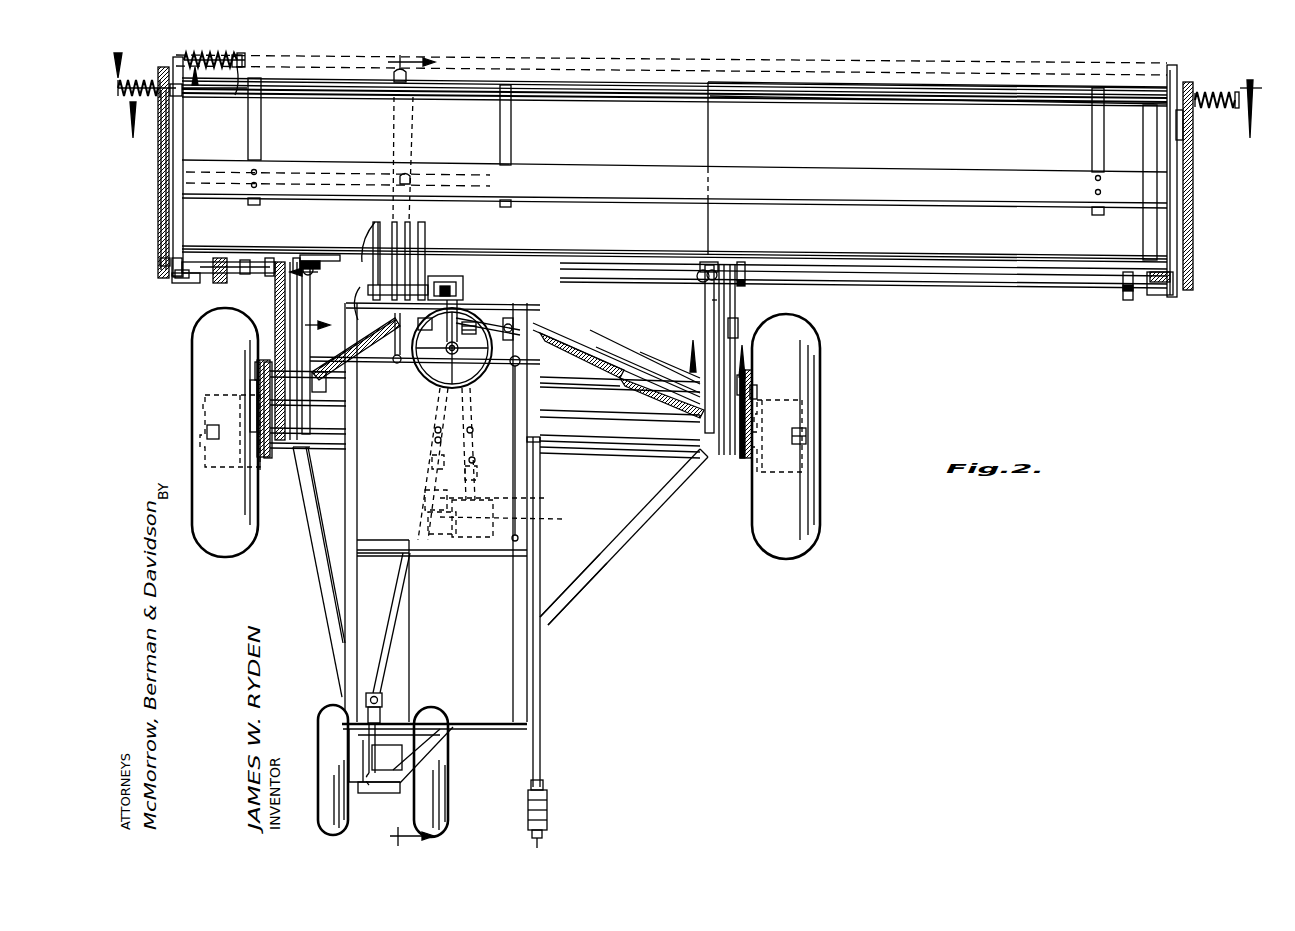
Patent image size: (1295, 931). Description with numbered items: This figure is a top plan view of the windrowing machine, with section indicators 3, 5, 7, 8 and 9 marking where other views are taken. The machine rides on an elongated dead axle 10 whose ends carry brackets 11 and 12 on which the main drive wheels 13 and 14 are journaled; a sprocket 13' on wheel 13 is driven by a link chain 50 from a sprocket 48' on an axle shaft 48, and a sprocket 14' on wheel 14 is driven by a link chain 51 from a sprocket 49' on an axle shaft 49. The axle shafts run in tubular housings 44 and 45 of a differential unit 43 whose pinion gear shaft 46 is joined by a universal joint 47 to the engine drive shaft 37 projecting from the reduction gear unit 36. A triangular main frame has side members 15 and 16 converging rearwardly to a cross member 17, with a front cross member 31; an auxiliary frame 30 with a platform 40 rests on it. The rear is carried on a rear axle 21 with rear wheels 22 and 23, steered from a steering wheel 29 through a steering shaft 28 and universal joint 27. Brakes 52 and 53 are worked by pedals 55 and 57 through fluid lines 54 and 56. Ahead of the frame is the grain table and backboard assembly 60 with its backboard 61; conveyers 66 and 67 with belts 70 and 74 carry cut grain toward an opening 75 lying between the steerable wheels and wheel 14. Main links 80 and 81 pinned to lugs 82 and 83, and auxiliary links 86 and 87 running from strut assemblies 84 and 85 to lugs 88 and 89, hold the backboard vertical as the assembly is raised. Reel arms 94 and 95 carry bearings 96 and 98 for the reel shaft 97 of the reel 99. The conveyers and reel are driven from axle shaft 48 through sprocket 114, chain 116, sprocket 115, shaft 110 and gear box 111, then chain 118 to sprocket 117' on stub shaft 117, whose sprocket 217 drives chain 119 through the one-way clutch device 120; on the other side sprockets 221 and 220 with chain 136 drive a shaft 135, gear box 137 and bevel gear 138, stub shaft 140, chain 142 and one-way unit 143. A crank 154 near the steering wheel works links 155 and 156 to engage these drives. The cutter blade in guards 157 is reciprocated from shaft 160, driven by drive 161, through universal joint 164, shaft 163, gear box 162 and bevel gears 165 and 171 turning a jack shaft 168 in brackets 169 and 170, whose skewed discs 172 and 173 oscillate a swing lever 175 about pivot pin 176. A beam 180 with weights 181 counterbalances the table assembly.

The section line 3 is at (695, 119).
The section line 5 is at (418, 452).
The section line 7 is at (156, 69).
The section line 8 is at (314, 296).
The section line 9 is at (713, 351).
The dead axle 10 is at (612, 445).
The crank or bracket 11 is at (268, 458).
The crank or bracket 12 is at (728, 458).
The main drive wheel 13 is at (209, 432).
The chain sprocket 13' is at (225, 440).
The main drive wheel 14 is at (769, 436).
The chain sprocket 14' is at (776, 439).
The side member 15 is at (318, 560).
The side member 16 is at (608, 560).
The cross member 17 is at (385, 793).
The rear axle 21 is at (368, 795).
The rear wheel 22 is at (322, 812).
The rear wheel 23 is at (446, 818).
The universal joint 27 is at (385, 708).
The steering shaft 28 is at (385, 632).
The steering wheel 29 is at (478, 315).
The auxiliary frame 30 is at (345, 518).
The front cross member 31 is at (650, 411).
The reduction gear unit 36 is at (511, 519).
The engine drive shaft 37 is at (504, 499).
The platform 40 is at (520, 320).
The differential unit 43 is at (620, 391).
The tubular axle housing 44 is at (308, 410).
The tubular axle housing 45 is at (588, 398).
The pinion gear shaft 46 is at (542, 462).
The universal joint 47 is at (478, 470).
The axle shaft 48 is at (354, 349).
The chain sprocket 48' is at (212, 370).
The axle shaft 49 is at (670, 358).
The chain sprocket 49' is at (773, 385).
The link chain 50 is at (230, 412).
The link chain 51 is at (760, 412).
The brake mechanism 52 is at (205, 440).
The brake mechanism 53 is at (810, 448).
The fluid line 54 is at (362, 315).
The brake pedal 55 is at (465, 332).
The fluid line 56 is at (612, 360).
The brake pedal 57 is at (505, 322).
The grain table and backboard assembly 60 is at (160, 240).
The backboard 61 is at (468, 252).
The endless conveyer 66 is at (498, 138).
The endless conveyer 67 is at (706, 138).
The belt 70 is at (490, 248).
The endless belt 74 is at (712, 268).
The opening 75 is at (632, 108).
The first main link 80 is at (312, 305).
The second main link 81 is at (714, 307).
The apertured lug 82 is at (698, 270).
The apertured lug 83 is at (300, 258).
The braced strut assembly 84 is at (250, 385).
The braced strut assembly 85 is at (755, 380).
The first auxiliary link 86 is at (300, 290).
The second auxiliary link 87 is at (702, 318).
The lug 88 is at (312, 258).
The lug 89 is at (732, 268).
The reel supporting arm 94 is at (176, 166).
The reel supporting arm 95 is at (1178, 210).
The bearing 96 is at (184, 95).
The reel shaft 97 is at (330, 90).
The bearing 98 is at (1178, 138).
The reel 99 is at (790, 100).
The shaft 110 is at (222, 283).
The gear box 111 is at (185, 283).
The sprocket 114 is at (260, 372).
The sprocket 115 is at (250, 262).
The link chain 116 is at (278, 306).
The stub shaft 117 is at (228, 247).
The sprocket 117' is at (241, 239).
The chain 118 is at (220, 258).
The chain 119 is at (160, 208).
The clutch device 120 is at (150, 74).
The shaft 135 is at (982, 278).
The chain 136 is at (740, 320).
The gear box 137 is at (1165, 295).
The beveled gear 138 is at (250, 62).
The stub shaft 140 is at (1150, 298).
The chain 142 is at (1193, 240).
The one way driving unit 143 is at (1226, 92).
The manually rotatable crank 154 is at (550, 335).
The link 155 is at (425, 427).
The link 156 is at (580, 345).
The guards 157 is at (238, 70).
The shaft 160 is at (425, 488).
The gear or chain and sprocket drive 161 is at (425, 518).
The gear box 162 is at (462, 278).
The shaft 163 is at (425, 430).
The universal joint 164 is at (425, 462).
The beveled gear 165 is at (456, 290).
The jack shaft 168 is at (378, 262).
The bracket 169 is at (378, 250).
The bracket 170 is at (423, 255).
The beveled gear 171 is at (435, 327).
The disc 172 is at (392, 252).
The disc 173 is at (417, 260).
The swing lever 175 is at (415, 130).
The pivot pin 176 is at (420, 160).
The beam 180 is at (542, 758).
The weights 181 is at (548, 808).
The sprocket 217 is at (160, 262).
The sprocket 220 is at (700, 278).
The sprocket 221 is at (755, 385).